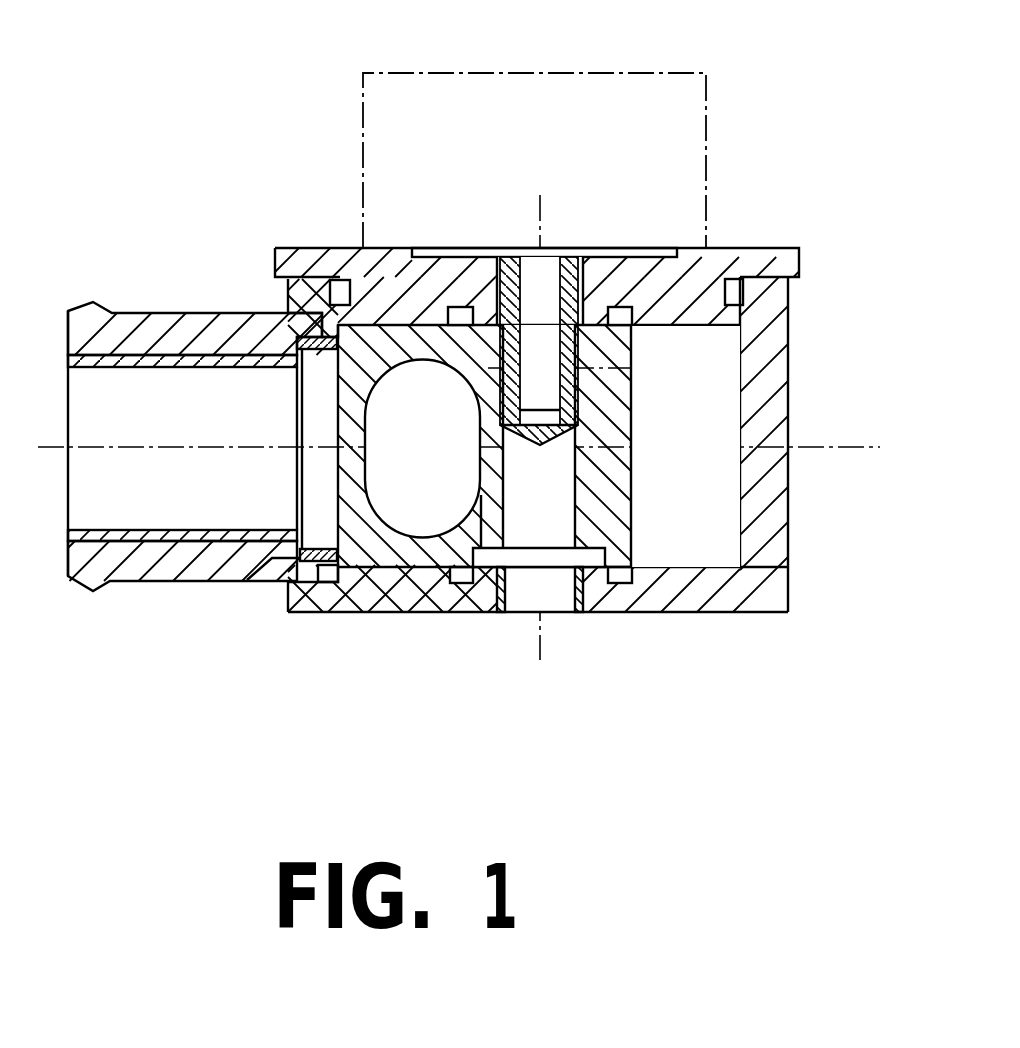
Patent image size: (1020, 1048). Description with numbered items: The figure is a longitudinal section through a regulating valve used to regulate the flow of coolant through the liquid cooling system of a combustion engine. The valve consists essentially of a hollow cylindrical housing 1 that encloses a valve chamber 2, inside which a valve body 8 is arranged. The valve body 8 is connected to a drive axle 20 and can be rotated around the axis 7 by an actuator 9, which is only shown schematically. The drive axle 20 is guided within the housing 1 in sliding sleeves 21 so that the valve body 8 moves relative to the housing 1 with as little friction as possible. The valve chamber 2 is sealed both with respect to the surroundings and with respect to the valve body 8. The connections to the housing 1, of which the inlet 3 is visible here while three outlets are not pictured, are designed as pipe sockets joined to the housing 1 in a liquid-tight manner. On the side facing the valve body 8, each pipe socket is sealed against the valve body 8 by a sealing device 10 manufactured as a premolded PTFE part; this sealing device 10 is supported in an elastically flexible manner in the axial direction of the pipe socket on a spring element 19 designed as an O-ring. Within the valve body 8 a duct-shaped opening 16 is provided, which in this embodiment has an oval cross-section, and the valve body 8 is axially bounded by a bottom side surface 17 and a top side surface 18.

The housing 1 is at (776, 403).
The valve chamber 2 is at (690, 548).
The inlet 3 is at (110, 425).
The axis 7 is at (542, 260).
The valve body 8 is at (385, 312).
The actuator 9 is at (407, 98).
The sealing device 10 is at (322, 357).
The duct-shaped opening 16 is at (425, 510).
The bottom side surface 17 is at (372, 585).
The top side surface 18 is at (397, 322).
The spring element 19 is at (262, 578).
The drive axle 20 is at (557, 477).
The sliding sleeves 21 is at (578, 567).